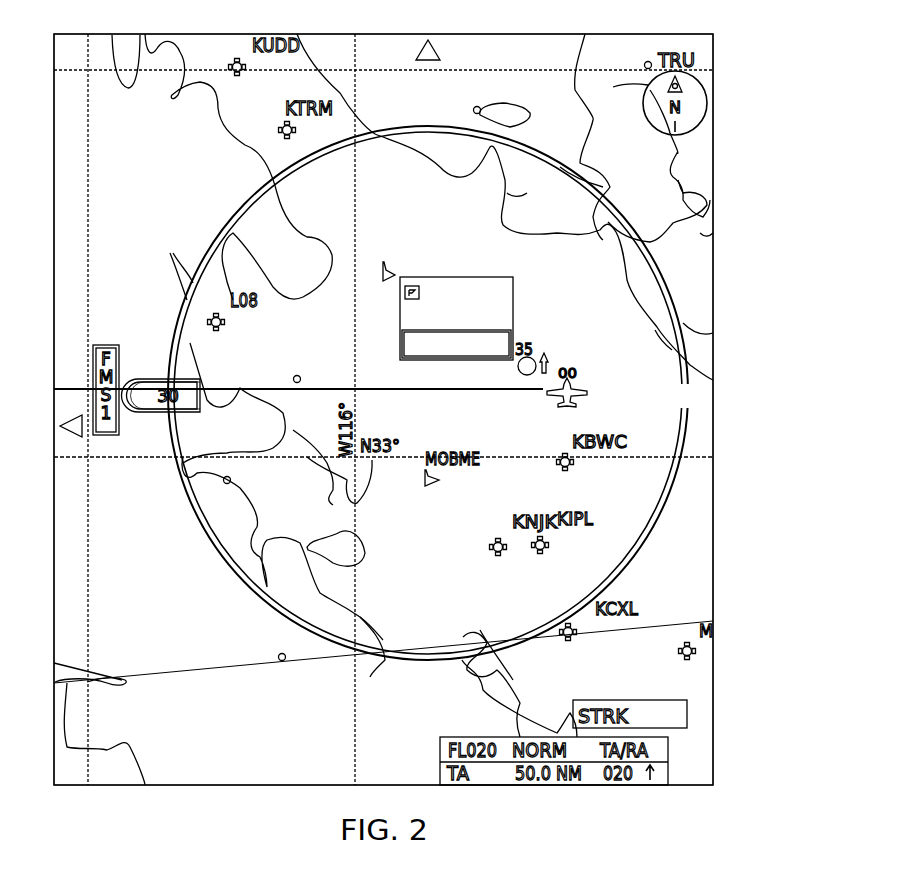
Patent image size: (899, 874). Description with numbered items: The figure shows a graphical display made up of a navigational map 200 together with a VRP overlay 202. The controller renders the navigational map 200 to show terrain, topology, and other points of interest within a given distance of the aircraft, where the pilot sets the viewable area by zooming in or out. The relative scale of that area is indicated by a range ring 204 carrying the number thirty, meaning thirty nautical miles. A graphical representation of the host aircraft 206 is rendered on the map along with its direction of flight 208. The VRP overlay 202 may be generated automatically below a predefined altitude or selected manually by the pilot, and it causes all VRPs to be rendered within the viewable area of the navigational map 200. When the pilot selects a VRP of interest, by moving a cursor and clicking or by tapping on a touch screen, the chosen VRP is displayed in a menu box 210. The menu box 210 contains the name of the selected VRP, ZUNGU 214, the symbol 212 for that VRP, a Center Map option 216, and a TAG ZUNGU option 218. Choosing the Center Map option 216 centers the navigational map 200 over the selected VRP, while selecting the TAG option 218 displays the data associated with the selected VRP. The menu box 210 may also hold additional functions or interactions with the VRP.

The navigational map 200 is at (716, 68).
The VRP overlay 202 is at (698, 237).
The range ring 204 is at (226, 233).
The host aircraft 206 is at (580, 392).
The direction of flight 208 is at (282, 377).
The menu box 210 is at (513, 289).
The symbol 212 is at (383, 270).
The ZUNGU 214 is at (422, 243).
The Center Map option 216 is at (500, 318).
The TAG ZUNGU option 218 is at (455, 360).